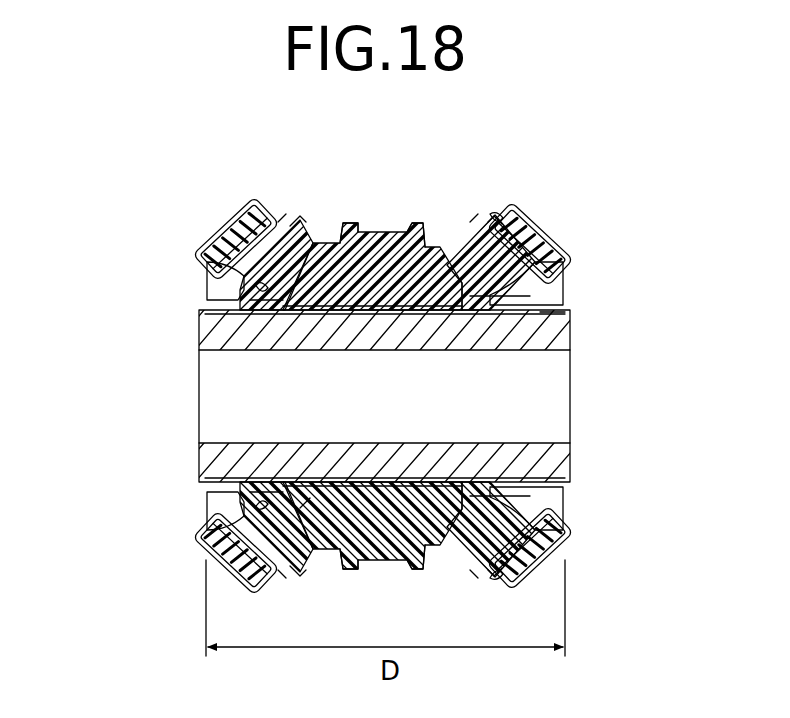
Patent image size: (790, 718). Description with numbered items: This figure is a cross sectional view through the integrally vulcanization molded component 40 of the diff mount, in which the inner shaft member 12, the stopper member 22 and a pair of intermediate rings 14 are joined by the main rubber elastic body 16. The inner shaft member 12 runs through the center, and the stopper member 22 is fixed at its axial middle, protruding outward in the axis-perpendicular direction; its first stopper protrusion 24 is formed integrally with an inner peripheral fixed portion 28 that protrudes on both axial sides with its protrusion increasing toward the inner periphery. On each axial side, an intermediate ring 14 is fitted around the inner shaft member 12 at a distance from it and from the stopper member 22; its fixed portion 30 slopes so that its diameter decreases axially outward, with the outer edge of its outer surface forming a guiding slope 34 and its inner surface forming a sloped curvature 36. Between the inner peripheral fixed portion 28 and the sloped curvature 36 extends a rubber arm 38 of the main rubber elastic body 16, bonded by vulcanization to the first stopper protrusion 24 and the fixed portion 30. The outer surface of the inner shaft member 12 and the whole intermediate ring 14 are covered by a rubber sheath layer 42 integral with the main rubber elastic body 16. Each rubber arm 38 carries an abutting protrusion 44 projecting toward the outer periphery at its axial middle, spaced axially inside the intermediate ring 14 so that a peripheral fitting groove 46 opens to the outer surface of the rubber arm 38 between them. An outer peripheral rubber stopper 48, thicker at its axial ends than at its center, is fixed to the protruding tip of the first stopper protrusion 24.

The inner shaft member 12 is at (198, 399).
The intermediate ring 14 is at (228, 235).
The main rubber elastic body 16 is at (312, 236).
The stopper member 22 is at (305, 505).
The first stopper protrusion 24 is at (376, 232).
The inner peripheral fixed portion 28 is at (300, 300).
The fixed portion 30 is at (260, 290).
The guiding slope 34 is at (252, 222).
The sloped curvature 36 is at (258, 257).
The rubber arm 38 is at (268, 300).
The integrally vulcanization molded component 40 is at (158, 178).
The rubber sheath layer 42 is at (548, 312).
The abutting protrusion 44 is at (298, 215).
The peripheral fitting groove 46 is at (282, 220).
The outer peripheral rubber stopper 48 is at (418, 228).